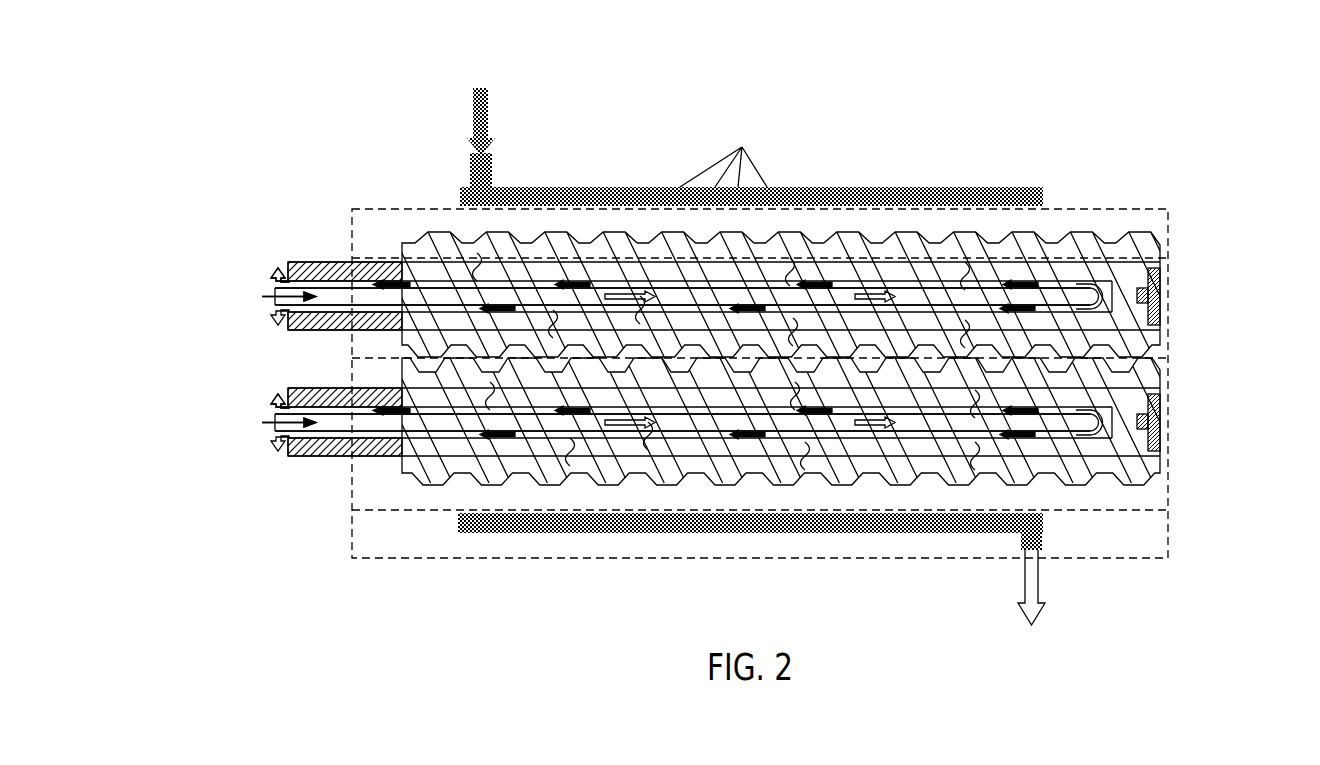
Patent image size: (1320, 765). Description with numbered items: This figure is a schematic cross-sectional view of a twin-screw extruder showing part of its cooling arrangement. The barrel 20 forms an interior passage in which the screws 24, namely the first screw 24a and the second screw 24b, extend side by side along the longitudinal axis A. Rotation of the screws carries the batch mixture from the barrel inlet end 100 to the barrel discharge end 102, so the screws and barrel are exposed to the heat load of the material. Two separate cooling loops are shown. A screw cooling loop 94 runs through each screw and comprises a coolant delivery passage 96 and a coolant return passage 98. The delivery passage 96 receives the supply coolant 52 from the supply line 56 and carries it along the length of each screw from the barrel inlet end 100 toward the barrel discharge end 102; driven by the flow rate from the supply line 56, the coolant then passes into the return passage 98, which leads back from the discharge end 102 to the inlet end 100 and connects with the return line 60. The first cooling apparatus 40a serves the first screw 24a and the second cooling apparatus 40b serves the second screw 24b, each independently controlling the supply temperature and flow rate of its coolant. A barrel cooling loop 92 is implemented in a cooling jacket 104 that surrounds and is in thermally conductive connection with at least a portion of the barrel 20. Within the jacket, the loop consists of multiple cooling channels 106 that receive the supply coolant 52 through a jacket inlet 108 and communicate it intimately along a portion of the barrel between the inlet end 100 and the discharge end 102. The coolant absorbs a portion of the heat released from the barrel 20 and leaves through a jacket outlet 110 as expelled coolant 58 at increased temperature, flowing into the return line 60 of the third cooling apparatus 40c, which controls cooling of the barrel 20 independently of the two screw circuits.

The barrel 20 is at (1130, 208).
The screws 24 is at (837, 351).
The first screw 24a is at (1140, 248).
The second screw 24b is at (1150, 463).
The first cooling apparatus 40a is at (200, 303).
The second cooling apparatus 40b is at (201, 431).
The third cooling apparatus 40c is at (516, 108).
The supply coolant 52 is at (473, 102).
The supply line 56 is at (468, 168).
The expelled coolant 58 is at (1036, 596).
The return line 60 is at (1040, 549).
The barrel cooling loop 92 is at (914, 134).
The screw cooling loop 94 is at (352, 263).
The coolant delivery passage 96 is at (362, 295).
The coolant return passage 98 is at (272, 282).
The barrel inlet end 100 is at (317, 363).
The barrel discharge end 102 is at (1212, 382).
The cooling jacket 104 is at (1010, 190).
The cooling channels 106 is at (742, 147).
The jacket inlet 108 is at (488, 187).
The jacket outlet 110 is at (1021, 537).
The longitudinal axis A is at (1127, 372).